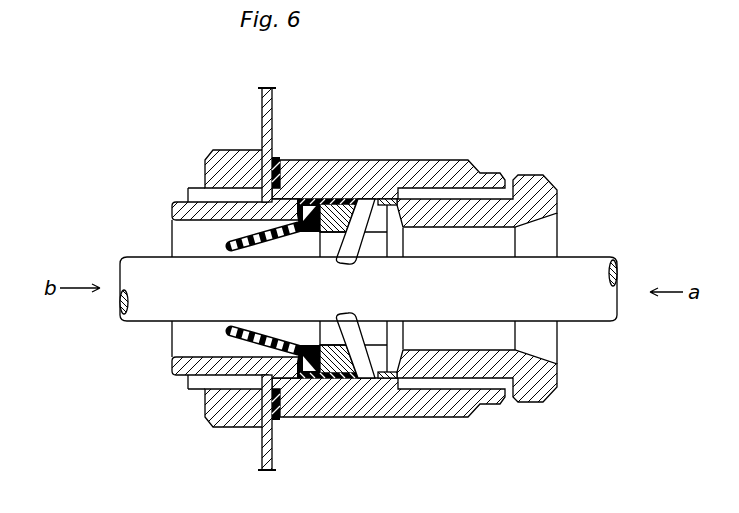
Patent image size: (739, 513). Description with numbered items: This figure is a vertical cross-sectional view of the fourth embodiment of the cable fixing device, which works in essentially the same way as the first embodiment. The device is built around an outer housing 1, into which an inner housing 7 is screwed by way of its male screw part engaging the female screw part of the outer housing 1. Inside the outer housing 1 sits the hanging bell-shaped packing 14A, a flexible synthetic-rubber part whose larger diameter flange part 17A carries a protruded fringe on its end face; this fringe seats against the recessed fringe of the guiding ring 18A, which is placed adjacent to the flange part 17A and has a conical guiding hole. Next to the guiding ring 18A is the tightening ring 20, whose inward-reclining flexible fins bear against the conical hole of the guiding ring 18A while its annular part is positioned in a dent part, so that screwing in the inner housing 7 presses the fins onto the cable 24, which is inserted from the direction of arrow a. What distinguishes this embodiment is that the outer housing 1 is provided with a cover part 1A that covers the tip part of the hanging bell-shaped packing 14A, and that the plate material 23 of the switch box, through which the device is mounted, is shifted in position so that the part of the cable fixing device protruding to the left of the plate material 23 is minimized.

The outer housing 1 is at (363, 162).
The cover part 1A is at (172, 202).
The inner housing 7 is at (543, 184).
The hanging bell-shaped packing 14A is at (236, 338).
The larger diameter flange part 17A is at (333, 382).
The guiding ring 18A is at (347, 383).
The tightening ring 20 is at (370, 385).
The plate material 23 is at (270, 103).
The cable 24 is at (585, 318).